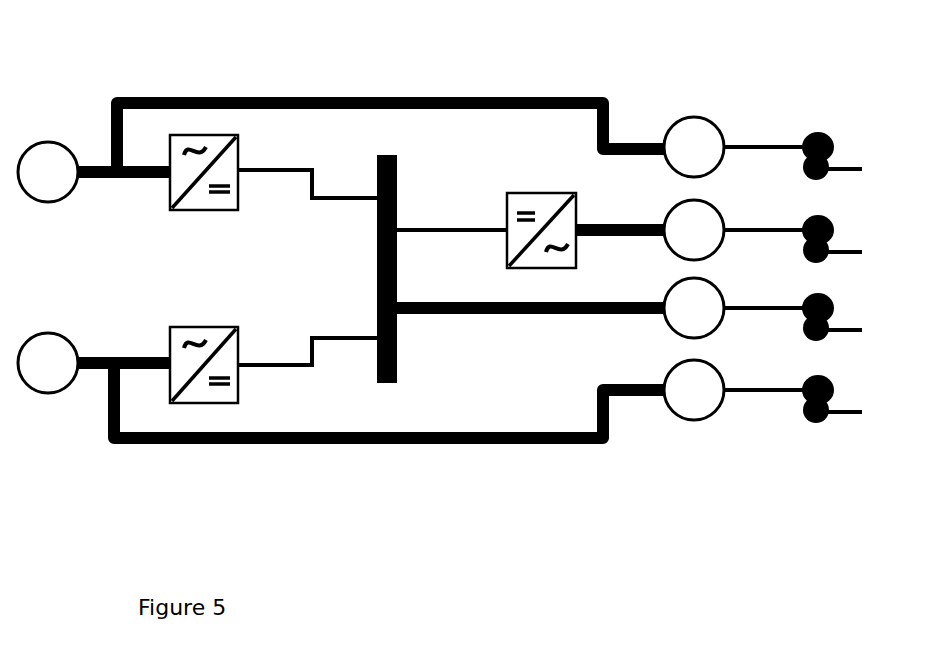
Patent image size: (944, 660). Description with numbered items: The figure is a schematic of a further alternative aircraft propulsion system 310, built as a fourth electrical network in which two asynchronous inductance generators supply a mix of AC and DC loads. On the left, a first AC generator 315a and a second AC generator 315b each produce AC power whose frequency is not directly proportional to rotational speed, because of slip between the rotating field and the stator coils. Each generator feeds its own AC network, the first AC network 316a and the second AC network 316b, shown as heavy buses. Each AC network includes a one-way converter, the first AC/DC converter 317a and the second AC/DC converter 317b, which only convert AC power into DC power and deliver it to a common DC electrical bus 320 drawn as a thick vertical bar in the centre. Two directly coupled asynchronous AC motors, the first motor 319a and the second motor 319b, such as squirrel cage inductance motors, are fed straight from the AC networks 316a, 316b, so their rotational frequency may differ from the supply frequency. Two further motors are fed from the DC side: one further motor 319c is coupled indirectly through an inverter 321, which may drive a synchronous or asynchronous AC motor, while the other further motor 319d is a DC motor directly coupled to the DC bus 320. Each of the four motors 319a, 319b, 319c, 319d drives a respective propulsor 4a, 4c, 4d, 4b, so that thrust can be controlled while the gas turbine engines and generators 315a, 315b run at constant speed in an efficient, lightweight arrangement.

The system 310 is at (535, 502).
The first AC generator 315a is at (48, 142).
The second AC generator 315b is at (50, 333).
The first AC network 316a is at (157, 97).
The second AC network 316b is at (312, 445).
The first AC/DC converter 317a is at (253, 168).
The second AC/DC converter 317b is at (204, 327).
The DC electrical bus 320 is at (397, 192).
The inverter 321 is at (542, 192).
The first directly coupled AC motor 319a is at (694, 117).
The second directly coupled AC motor 319b is at (718, 208).
The first further motor 319c is at (716, 281).
The second further motor 319d is at (716, 362).
The propulsor 4a is at (828, 131).
The propulsor 4b is at (822, 375).
The propulsor 4c is at (832, 232).
The propulsor 4d is at (832, 308).